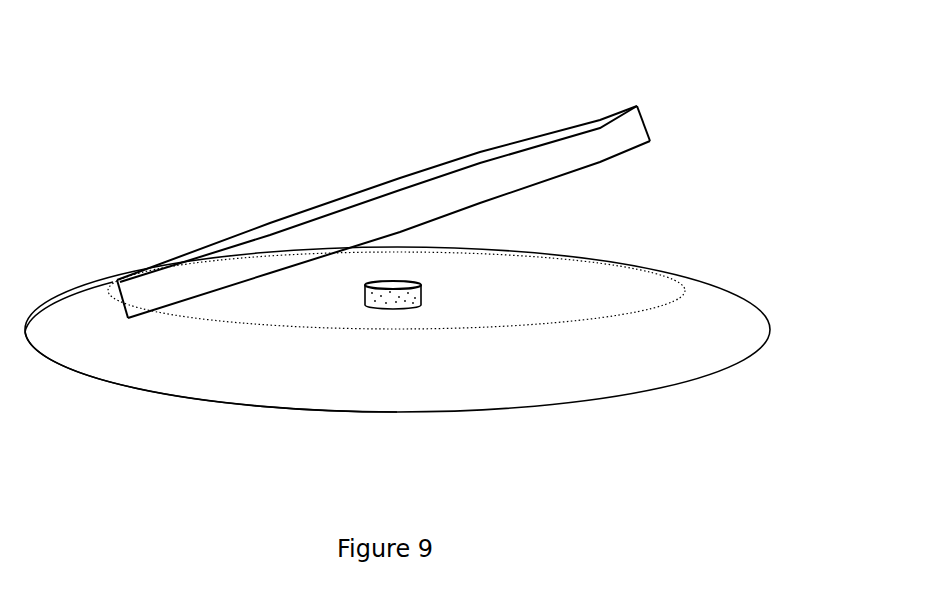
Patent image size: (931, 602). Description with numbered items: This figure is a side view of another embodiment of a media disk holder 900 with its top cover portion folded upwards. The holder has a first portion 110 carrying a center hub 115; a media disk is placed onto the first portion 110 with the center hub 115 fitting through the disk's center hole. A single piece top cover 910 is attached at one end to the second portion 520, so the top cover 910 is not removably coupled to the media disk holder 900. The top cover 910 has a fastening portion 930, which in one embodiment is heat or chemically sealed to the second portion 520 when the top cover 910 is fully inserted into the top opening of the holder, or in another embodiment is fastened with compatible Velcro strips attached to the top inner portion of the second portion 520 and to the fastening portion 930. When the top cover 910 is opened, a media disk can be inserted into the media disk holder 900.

The media disk holder 900 is at (217, 145).
The top cover 910 is at (467, 155).
The fastening portion 930 is at (646, 126).
The first portion 110 is at (542, 282).
The center hub 115 is at (402, 307).
The second portion 520 is at (168, 345).